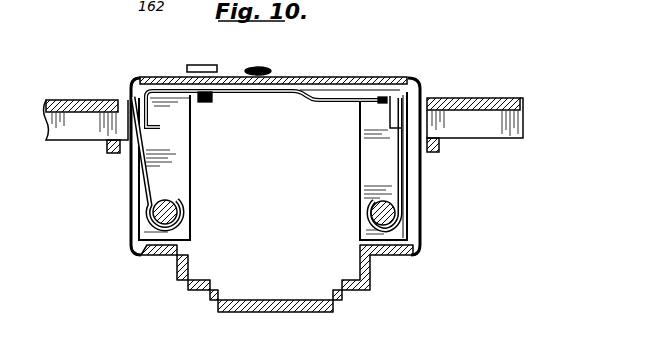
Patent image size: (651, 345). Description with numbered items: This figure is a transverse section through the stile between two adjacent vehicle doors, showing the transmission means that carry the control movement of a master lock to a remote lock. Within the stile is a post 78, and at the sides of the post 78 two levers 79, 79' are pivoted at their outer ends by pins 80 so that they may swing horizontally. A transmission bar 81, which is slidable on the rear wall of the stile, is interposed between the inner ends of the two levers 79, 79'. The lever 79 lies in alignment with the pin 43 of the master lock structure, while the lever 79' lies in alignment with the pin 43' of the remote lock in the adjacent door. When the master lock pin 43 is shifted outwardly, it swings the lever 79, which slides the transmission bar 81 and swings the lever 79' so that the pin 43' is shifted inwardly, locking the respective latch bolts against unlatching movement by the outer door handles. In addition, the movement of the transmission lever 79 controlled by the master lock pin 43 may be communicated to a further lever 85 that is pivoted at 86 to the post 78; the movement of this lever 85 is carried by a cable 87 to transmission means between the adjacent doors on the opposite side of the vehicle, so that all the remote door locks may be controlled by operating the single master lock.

The pin of the master lock 43 is at (475, 110).
The pin of the remote lock 43' is at (86, 109).
The post 78 is at (370, 272).
The lever 79 is at (365, 163).
The lever 79' is at (181, 163).
The pins 80 is at (173, 217).
The transmission bar 81 is at (357, 88).
The lever 85 is at (323, 97).
The pivot 86 is at (350, 103).
The cable 87 is at (262, 68).